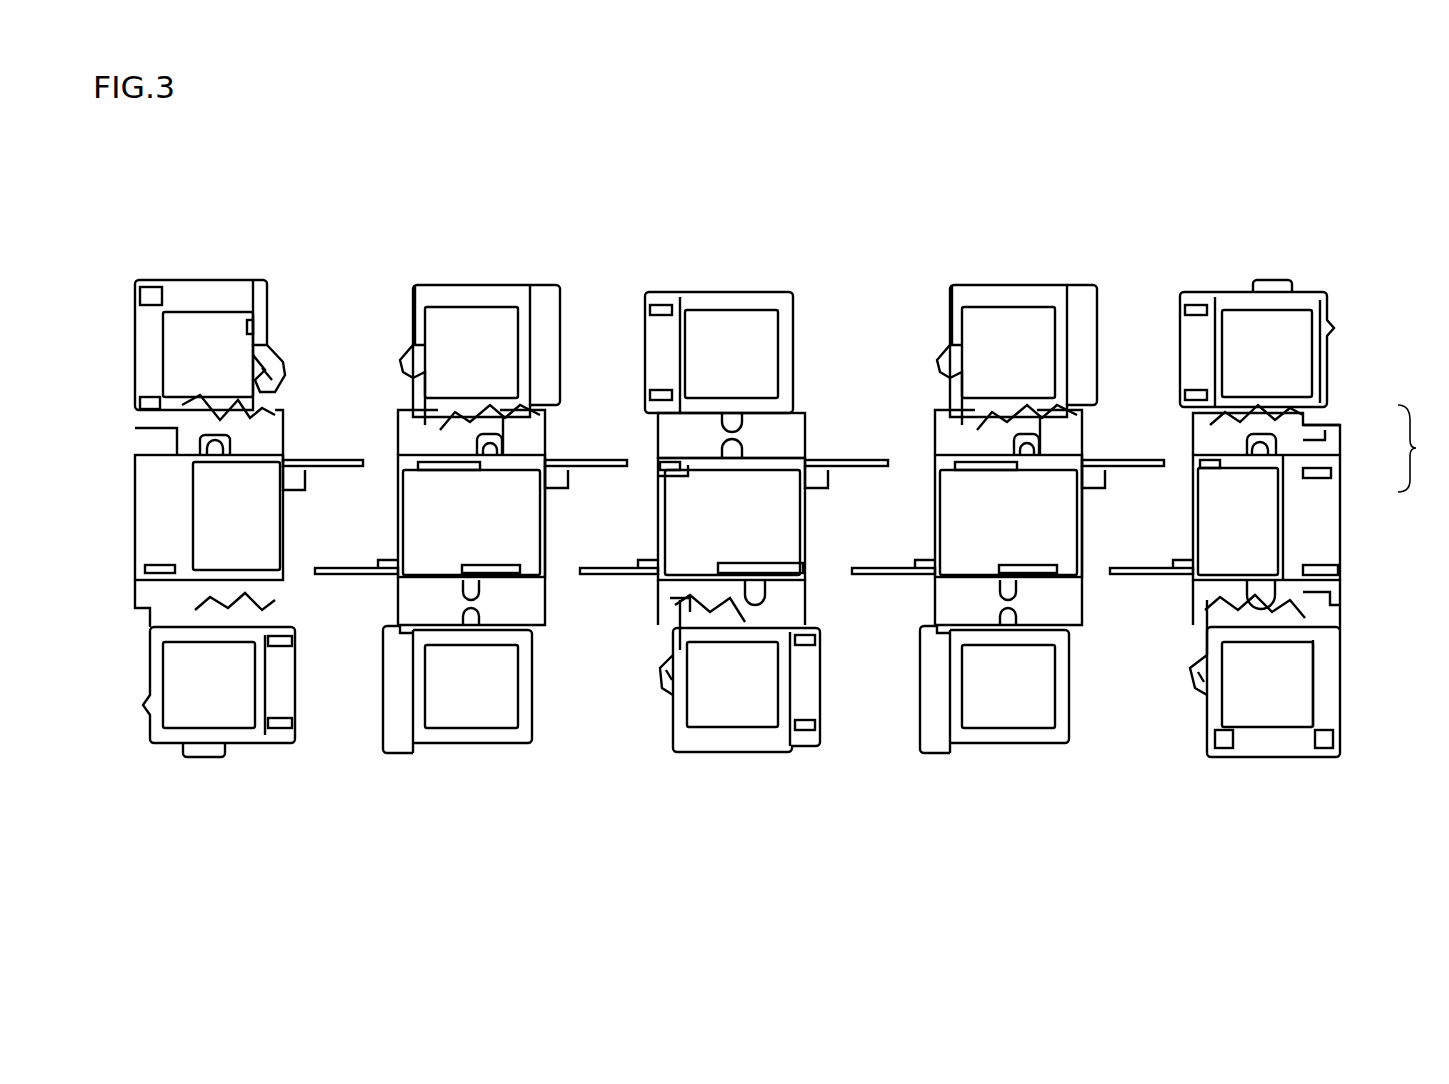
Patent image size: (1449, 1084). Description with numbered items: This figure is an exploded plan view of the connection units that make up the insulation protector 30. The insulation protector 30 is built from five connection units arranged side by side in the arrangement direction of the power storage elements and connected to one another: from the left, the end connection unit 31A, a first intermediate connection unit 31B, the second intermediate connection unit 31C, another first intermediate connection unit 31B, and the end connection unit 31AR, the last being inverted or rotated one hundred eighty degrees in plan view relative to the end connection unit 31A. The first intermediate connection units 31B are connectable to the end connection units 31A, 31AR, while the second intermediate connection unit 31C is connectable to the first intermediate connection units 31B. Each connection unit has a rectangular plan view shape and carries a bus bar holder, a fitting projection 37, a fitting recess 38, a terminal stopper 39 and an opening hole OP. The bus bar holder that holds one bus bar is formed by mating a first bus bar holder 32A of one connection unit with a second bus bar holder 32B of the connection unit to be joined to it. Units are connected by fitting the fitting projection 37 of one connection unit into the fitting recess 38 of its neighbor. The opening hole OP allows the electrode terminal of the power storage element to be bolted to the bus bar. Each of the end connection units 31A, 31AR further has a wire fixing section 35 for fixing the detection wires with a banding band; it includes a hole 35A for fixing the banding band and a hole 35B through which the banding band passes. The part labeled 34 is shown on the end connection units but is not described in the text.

The insulation protector 30 is at (1210, 874).
The end connection unit 31A is at (215, 208).
The first intermediate connection unit 31B is at (471, 208).
The second intermediate connection unit 31C is at (727, 208).
The end connection unit 31AR is at (1273, 208).
The first bus bar holder 32A is at (178, 748).
The second bus bar holder 32B is at (465, 752).
The end housing 34 is at (188, 300).
The wire fixing section 35 is at (1422, 448).
The hole for fixing the banding band 35A is at (1318, 442).
The hole through which the banding band passes 35B is at (1318, 473).
The fitting projection 37 is at (335, 460).
The fitting recess 38 is at (400, 465).
The terminal stopper 39 is at (281, 347).
The opening hole OP is at (182, 356).